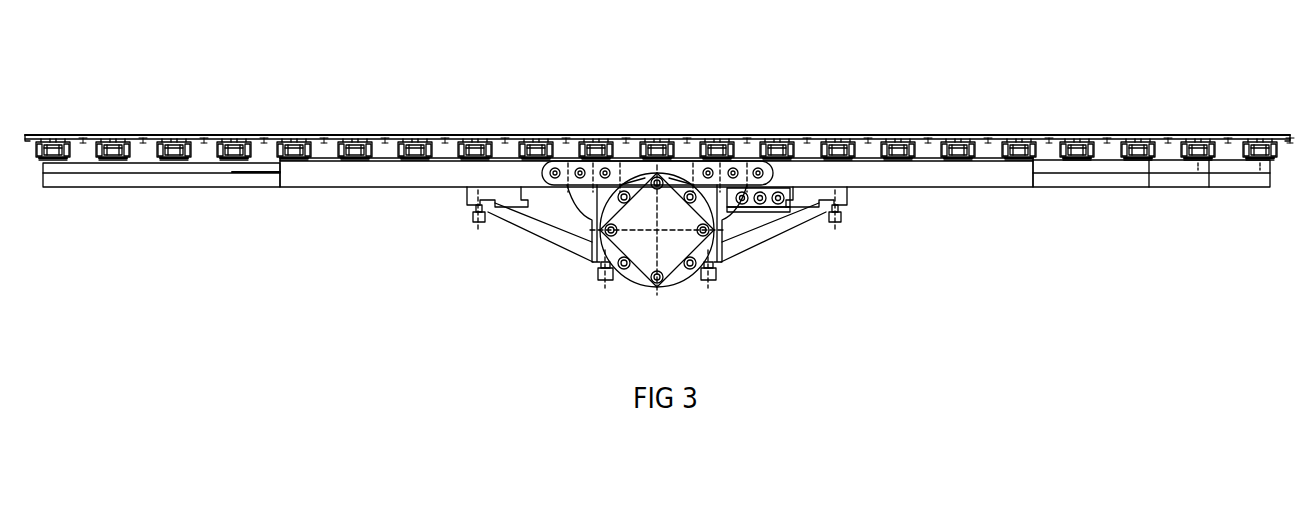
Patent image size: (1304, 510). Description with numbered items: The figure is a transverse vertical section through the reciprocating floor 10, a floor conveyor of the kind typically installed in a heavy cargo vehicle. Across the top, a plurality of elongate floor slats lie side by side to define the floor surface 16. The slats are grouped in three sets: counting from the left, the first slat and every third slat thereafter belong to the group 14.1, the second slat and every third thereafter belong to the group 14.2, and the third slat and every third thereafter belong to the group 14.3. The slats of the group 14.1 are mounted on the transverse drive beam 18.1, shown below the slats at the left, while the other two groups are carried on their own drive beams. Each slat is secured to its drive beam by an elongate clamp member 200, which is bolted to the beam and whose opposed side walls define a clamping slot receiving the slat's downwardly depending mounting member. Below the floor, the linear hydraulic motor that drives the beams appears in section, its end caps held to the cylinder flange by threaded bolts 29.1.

The reciprocating floor 10 is at (947, 55).
The first group of slats 14.1 is at (44, 142).
The second group of slats 14.2 is at (98, 142).
The third group of slats 14.3 is at (173, 142).
The floor surface 16 is at (537, 136).
The transverse drive beam 18.1 is at (154, 178).
The threaded bolts 29.1 is at (680, 277).
The clamp member 200 is at (1138, 160).